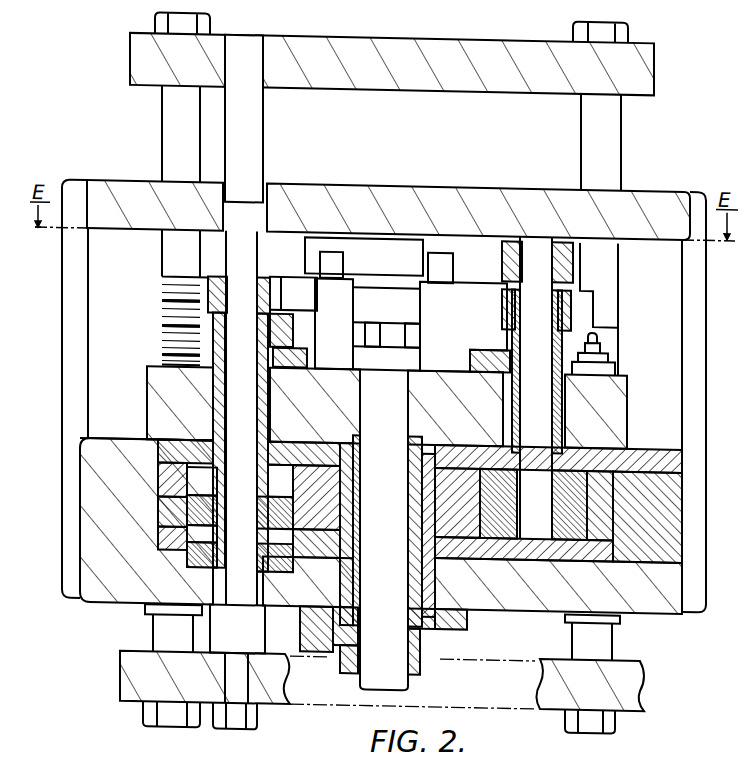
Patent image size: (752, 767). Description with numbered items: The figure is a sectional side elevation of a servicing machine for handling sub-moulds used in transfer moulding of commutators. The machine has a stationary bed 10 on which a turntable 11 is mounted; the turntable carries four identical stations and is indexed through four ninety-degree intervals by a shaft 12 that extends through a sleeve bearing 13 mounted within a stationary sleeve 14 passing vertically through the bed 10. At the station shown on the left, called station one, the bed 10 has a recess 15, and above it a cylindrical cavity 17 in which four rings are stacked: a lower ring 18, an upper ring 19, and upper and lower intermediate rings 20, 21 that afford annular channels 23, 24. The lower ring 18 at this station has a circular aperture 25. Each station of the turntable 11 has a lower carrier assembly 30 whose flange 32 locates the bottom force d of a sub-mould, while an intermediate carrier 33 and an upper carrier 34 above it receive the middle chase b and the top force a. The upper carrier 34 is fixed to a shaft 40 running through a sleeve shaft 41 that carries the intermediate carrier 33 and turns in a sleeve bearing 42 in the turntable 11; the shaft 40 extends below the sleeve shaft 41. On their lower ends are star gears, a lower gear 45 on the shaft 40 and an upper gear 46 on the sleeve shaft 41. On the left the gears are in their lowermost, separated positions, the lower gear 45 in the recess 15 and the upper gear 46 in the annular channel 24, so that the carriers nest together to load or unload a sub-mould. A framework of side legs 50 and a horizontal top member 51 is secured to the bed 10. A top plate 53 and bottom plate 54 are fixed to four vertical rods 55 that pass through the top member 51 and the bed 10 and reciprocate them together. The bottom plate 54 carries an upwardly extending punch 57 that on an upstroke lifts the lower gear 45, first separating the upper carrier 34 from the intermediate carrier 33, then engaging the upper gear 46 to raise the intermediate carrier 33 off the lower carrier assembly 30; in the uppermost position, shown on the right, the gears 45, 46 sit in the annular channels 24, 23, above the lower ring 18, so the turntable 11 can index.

The stationary bed 10 is at (523, 594).
The turntable 11 is at (350, 388).
The shaft 12 is at (398, 442).
The sleeve bearing 13 is at (414, 483).
The stationary sleeve 14 is at (435, 526).
The recess 15 is at (185, 563).
The cylindrical cavity 17 is at (188, 466).
The lower ring 18 is at (160, 530).
The upper ring 19 is at (160, 447).
The upper intermediate ring 20 is at (125, 447).
The lower intermediate ring 21 is at (176, 520).
The annular channel 23 is at (190, 482).
The annular channel 24 is at (503, 522).
The circular aperture 25 is at (205, 532).
The lower carrier assembly 30 is at (272, 332).
The flange 32 is at (207, 367).
The intermediate carrier 33 is at (270, 326).
The upper carrier 34 is at (272, 289).
The shaft 40 is at (256, 307).
The sleeve shaft 41 is at (262, 420).
The sleeve bearing 42 is at (262, 394).
The lower gear 45 is at (210, 558).
The upper gear 46 is at (190, 515).
The side legs 50 is at (73, 256).
The horizontal top member 51 is at (369, 178).
The top plate 53 is at (438, 75).
The bottom plate 54 is at (271, 690).
The vertical rods 55 is at (175, 128).
The punch 57 is at (257, 613).
The top force a is at (162, 299).
The middle chase b is at (162, 324).
The bottom force d is at (162, 353).